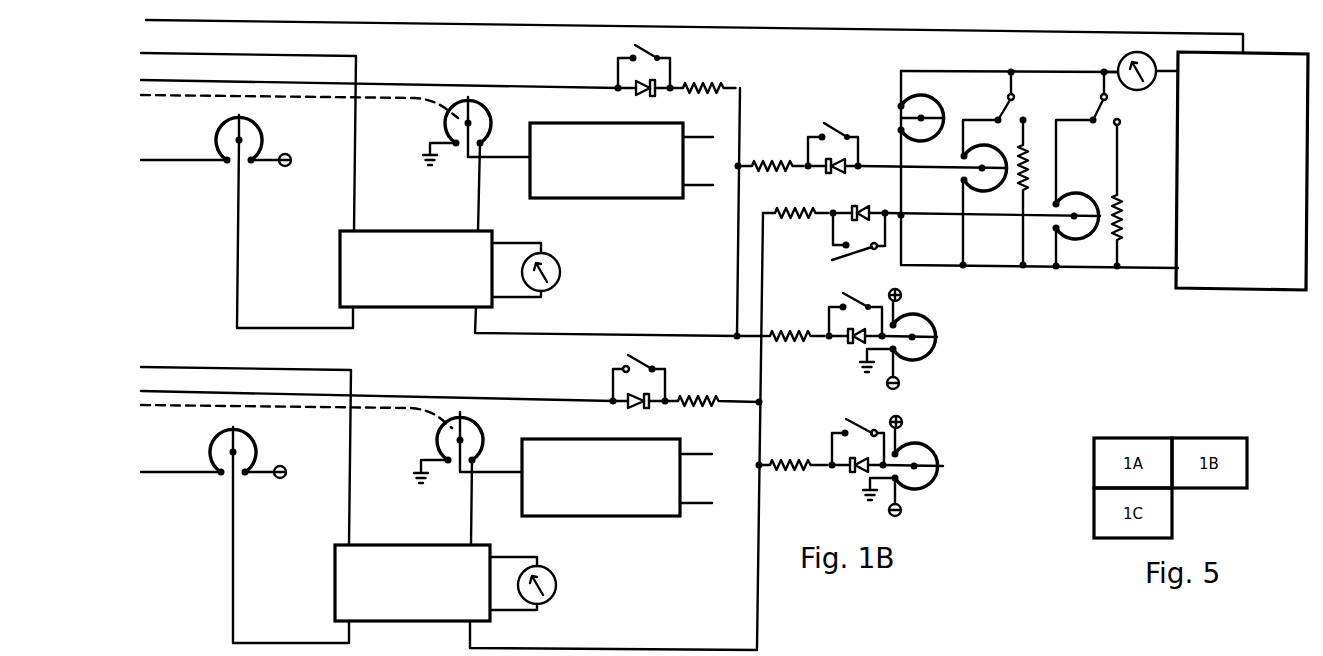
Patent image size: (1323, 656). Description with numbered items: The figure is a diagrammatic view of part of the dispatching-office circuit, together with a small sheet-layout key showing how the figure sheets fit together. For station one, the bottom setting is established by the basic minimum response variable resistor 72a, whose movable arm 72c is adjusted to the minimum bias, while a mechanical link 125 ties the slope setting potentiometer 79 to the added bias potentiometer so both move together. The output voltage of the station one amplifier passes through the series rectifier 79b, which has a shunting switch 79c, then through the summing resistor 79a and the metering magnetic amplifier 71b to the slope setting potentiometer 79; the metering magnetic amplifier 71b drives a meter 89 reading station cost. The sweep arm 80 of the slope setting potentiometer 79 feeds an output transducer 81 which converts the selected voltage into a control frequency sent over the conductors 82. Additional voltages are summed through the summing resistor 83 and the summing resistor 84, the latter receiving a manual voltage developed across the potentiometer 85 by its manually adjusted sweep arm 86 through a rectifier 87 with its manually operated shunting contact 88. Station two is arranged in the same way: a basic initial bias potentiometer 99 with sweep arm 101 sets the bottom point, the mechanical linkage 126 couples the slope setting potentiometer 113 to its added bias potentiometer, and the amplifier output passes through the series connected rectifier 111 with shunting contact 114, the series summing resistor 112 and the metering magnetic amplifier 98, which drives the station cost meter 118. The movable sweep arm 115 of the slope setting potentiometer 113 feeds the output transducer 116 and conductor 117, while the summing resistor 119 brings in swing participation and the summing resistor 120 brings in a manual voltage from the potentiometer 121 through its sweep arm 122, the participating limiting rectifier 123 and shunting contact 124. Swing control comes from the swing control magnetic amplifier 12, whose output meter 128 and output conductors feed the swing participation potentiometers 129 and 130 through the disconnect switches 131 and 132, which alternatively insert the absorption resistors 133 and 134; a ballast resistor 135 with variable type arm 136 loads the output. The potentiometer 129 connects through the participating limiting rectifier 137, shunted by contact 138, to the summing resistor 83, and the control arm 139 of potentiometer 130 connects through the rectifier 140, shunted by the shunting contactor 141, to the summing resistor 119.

The swing control magnetic amplifier 12 is at (1178, 157).
The metering magnetic amplifier 71b is at (378, 231).
The basic minimum response variable resistor 72a is at (263, 137).
The movable arm 72c is at (241, 124).
The slope setting potentiometer 79 is at (489, 117).
The sweep arm 80 is at (471, 99).
The summing resistor 79a is at (700, 86).
The series rectifier 79b is at (643, 94).
The shunting switch 79c is at (651, 51).
The output transducer 81 is at (597, 198).
The conductors 82 is at (702, 139).
The summing resistor 83 is at (766, 161).
The summing resistor 84 is at (783, 341).
The potentiometer 85 is at (931, 318).
The manually adjusted sweep arm 86 is at (937, 340).
The rectifier 87 is at (848, 347).
The manually operated shunting contact 88 is at (852, 297).
The meter 89 is at (561, 272).
The metering magnetic amplifier 98 is at (418, 545).
The basic initial bias potentiometer 99 is at (258, 447).
The sweep arm 101 is at (238, 429).
The series connected rectifier 111 is at (640, 409).
The series summing resistor 112 is at (694, 398).
The slope setting potentiometer 113 is at (480, 436).
The shunting contact 114 is at (643, 359).
The movable sweep arm 115 is at (463, 416).
The output transducer 116 is at (606, 518).
The conductor 117 is at (705, 456).
The station cost meter 118 is at (547, 571).
The summing resistor 119 is at (793, 221).
The summing resistor 120 is at (788, 471).
The potentiometer 121 is at (926, 446).
The sweep arm 122 is at (943, 474).
The participating limiting rectifier 123 is at (851, 476).
The shunting contact 124 is at (858, 410).
The mechanical link 125 is at (162, 96).
The mechanical linkage 126 is at (163, 406).
The output meter 128 is at (1121, 57).
The swing participation potentiometer 129 is at (969, 153).
The swing participation potentiometer 130 is at (1083, 187).
The disconnect switch 131 is at (1005, 108).
The disconnect switch 132 is at (1094, 111).
The absorption resistor 133 is at (1015, 186).
The absorption resistor 134 is at (1124, 210).
The ballast resistor 135 is at (908, 100).
The variable type arm 136 is at (943, 117).
The participating limiting rectifier 137 is at (836, 172).
The shunting contact 138 is at (831, 127).
The control arm 139 is at (1098, 230).
The rectifier 140 is at (856, 207).
The shunting contactor 141 is at (833, 261).